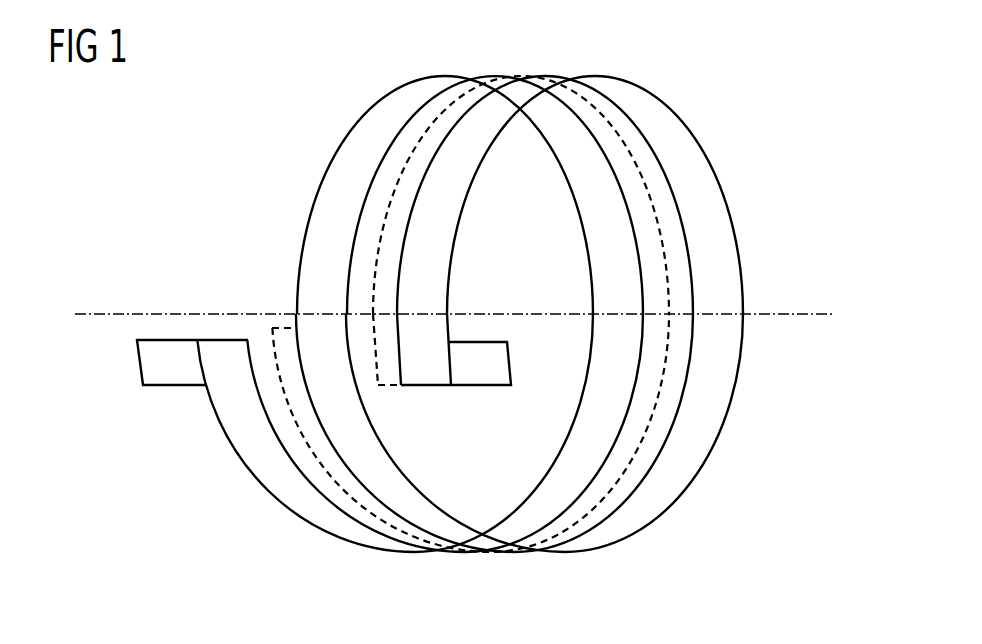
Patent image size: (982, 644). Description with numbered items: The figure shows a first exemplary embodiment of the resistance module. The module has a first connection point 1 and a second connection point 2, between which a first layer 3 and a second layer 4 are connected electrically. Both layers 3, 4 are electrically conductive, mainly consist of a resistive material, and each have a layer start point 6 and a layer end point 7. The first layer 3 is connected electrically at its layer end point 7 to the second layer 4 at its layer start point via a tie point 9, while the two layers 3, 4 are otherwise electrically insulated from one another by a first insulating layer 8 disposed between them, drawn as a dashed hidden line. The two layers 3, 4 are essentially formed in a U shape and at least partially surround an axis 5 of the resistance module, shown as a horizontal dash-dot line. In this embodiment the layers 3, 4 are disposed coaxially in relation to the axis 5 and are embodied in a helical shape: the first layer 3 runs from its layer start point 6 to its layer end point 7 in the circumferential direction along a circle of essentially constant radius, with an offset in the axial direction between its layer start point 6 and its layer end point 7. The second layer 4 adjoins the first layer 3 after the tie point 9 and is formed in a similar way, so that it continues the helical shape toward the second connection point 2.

The first connection point 1 is at (488, 388).
The second connection point 2 is at (171, 340).
The first layer 3 is at (717, 177).
The second layer 4 is at (350, 128).
The axis 5 is at (802, 312).
The layer start point 6 is at (322, 340).
The layer end point 7 is at (231, 340).
The first insulating layer 8 is at (662, 242).
The tie point 9 is at (298, 362).